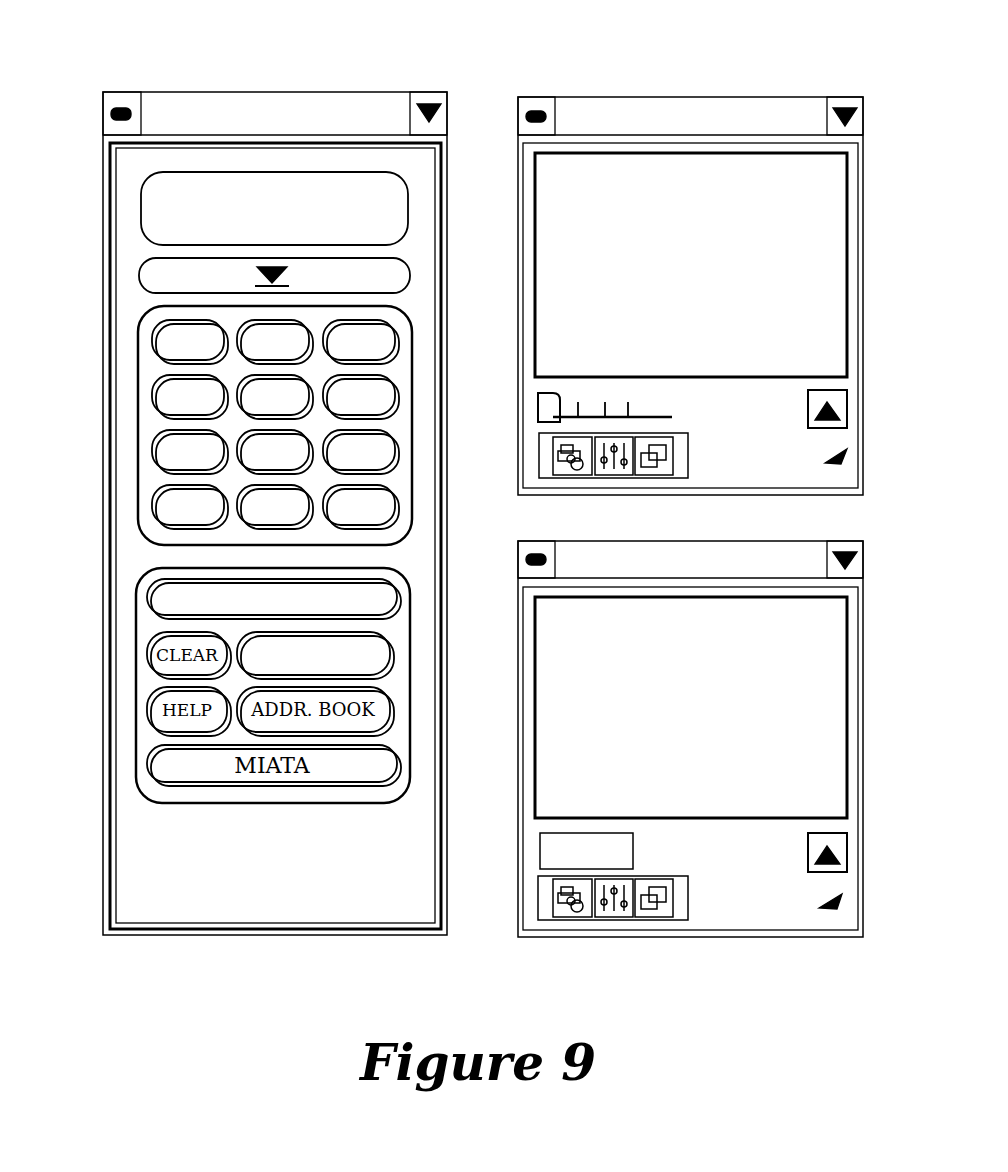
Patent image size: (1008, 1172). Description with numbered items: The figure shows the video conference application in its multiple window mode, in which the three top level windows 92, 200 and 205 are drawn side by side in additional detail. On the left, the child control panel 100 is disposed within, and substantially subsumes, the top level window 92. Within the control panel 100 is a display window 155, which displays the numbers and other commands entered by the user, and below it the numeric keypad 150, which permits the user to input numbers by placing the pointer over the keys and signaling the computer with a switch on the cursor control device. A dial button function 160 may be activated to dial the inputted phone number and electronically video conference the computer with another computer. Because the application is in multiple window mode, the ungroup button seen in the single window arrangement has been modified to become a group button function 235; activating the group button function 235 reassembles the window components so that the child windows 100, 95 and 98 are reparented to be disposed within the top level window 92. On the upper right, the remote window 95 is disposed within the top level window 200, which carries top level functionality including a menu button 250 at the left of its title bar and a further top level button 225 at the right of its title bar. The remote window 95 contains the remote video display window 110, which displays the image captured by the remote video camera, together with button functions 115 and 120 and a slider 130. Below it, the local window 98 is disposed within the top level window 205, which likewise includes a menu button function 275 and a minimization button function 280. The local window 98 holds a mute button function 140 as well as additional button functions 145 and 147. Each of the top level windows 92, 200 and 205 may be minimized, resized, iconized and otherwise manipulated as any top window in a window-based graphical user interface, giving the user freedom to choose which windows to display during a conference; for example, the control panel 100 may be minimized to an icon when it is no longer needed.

The video conference parent window 92 is at (178, 940).
The control panel window 100 is at (271, 864).
The display window 155 is at (203, 227).
The numeric keypad 150 is at (152, 450).
The dial button function 160 is at (182, 598).
The group button function 235 is at (376, 656).
The top level window 200 is at (690, 267).
The menu button 250 is at (538, 90).
The zoom box of REMOTE window 225 is at (843, 98).
The remote video display window 110 is at (807, 233).
The slider 130 is at (547, 410).
The remote window 95 is at (845, 456).
The button function 120 is at (568, 474).
The button function 115 is at (598, 475).
The top level window 205 is at (689, 734).
The minimization button function 280 is at (846, 546).
The menu button function 275 is at (531, 546).
The mute button function 140 is at (550, 857).
The button function 145 is at (578, 918).
The button function 147 is at (602, 918).
The local window 98 is at (840, 902).